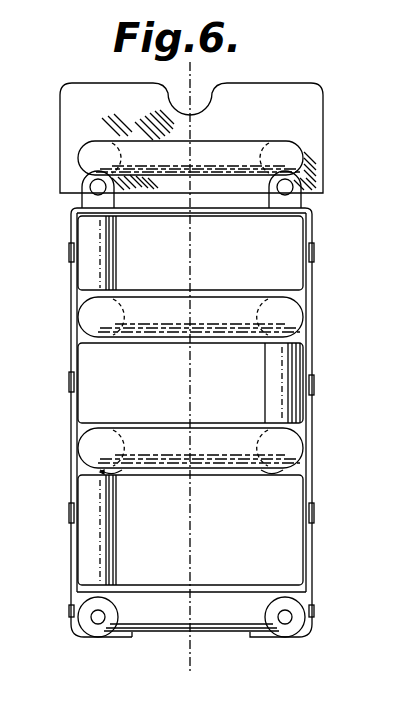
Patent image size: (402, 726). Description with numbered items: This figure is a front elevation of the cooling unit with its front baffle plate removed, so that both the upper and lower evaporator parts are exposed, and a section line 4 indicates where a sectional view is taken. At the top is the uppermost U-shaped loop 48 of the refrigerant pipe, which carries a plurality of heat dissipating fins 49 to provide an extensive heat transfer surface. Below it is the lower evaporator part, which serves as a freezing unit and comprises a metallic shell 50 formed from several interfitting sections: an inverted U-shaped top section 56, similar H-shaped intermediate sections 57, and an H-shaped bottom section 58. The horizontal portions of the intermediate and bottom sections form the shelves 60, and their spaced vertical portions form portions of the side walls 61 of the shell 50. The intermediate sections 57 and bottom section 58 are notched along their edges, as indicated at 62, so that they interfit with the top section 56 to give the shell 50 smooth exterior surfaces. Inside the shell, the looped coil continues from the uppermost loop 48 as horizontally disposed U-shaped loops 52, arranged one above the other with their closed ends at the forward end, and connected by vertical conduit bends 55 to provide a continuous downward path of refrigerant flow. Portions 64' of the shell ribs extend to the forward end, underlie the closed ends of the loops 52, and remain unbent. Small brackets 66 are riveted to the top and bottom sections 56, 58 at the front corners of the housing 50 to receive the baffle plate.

The section line 4- 4 is at (170, 70).
The U-shaped loop 48 is at (243, 150).
The heat dissipating fins 49 is at (314, 100).
The metallic shell 50 is at (315, 368).
The U-shaped loops 52 is at (173, 335).
The vertical conduit bends 55 is at (112, 253).
The top section 56 is at (313, 227).
The intermediate sections 57 is at (313, 318).
The bottom section 58 is at (318, 572).
The shelves 60 is at (222, 291).
The side walls 61 is at (72, 550).
The notches 62 is at (69, 252).
The unbent rib portions 64' is at (191, 489).
The brackets 66 is at (88, 199).